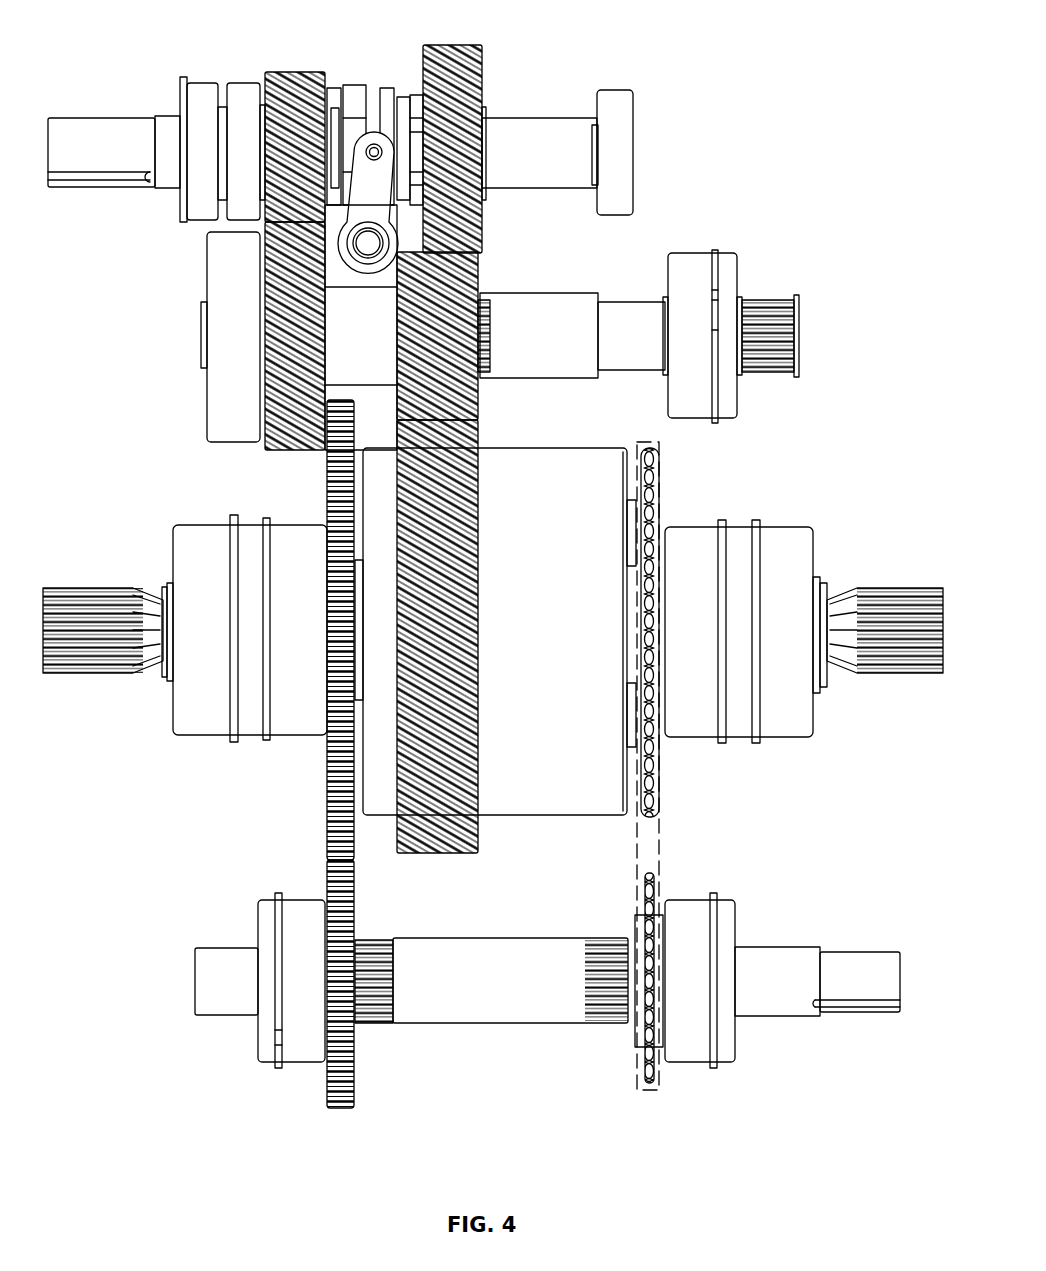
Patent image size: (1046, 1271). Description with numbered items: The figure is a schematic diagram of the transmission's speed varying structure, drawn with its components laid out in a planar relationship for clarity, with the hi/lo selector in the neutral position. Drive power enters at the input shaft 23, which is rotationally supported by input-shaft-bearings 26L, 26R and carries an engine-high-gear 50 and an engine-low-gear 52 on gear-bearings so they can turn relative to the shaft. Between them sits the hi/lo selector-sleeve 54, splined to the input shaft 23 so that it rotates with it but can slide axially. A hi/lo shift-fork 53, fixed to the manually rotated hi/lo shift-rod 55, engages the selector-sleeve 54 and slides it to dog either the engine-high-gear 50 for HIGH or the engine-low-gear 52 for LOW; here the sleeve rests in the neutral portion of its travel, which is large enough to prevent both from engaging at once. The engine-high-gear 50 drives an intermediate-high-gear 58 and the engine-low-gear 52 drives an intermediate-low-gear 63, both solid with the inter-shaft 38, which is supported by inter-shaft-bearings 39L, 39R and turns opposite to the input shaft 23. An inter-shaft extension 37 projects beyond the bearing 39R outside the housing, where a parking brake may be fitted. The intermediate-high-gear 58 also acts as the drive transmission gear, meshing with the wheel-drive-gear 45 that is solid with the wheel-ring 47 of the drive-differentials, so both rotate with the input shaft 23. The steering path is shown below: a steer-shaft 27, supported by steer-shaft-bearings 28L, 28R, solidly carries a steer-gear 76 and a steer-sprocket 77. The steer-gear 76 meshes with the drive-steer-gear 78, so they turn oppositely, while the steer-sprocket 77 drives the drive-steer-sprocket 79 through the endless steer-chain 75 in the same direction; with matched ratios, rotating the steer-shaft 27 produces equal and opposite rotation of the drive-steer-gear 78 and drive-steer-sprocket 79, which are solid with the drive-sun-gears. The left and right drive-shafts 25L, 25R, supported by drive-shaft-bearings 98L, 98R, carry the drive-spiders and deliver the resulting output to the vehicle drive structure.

The input shaft 23 is at (549, 164).
The input-shaft-bearing 26L is at (238, 83).
The input-shaft-bearing 26R is at (636, 105).
The engine-low-gear 52 is at (304, 70).
The engine-high-gear 50 is at (455, 46).
The hi/lo selector-sleeve 54 is at (362, 85).
The hi/lo shift-fork 53 is at (376, 130).
The hi/lo shift-rod 55 is at (366, 258).
The intermediate-low-gear 63 is at (298, 448).
The inter-shaft-bearing 39L is at (207, 280).
The inter-shaft-bearing 39R is at (710, 252).
The intermediate-high-gear 58 is at (478, 398).
The inter-shaft 38 is at (549, 342).
The inter-shaft extension 37 is at (778, 300).
The drive-shaft 25L is at (95, 676).
The drive-shaft 25R is at (912, 676).
The drive-shaft-bearing 98L is at (175, 735).
The drive-shaft-bearing 98R is at (813, 737).
The drive-steer-gear 78 is at (330, 772).
The steer-gear 76 is at (355, 1062).
The wheel-drive-gear 45 is at (480, 830).
The wheel-ring 47 is at (575, 815).
The drive-steer-sprocket 79 is at (658, 478).
The steer-chain 75 is at (660, 822).
The steer-sprocket 77 is at (656, 1062).
The steer-shaft 27 is at (503, 989).
The steer-shaft-bearing 28L is at (258, 900).
The steer-shaft-bearing 28R is at (735, 900).